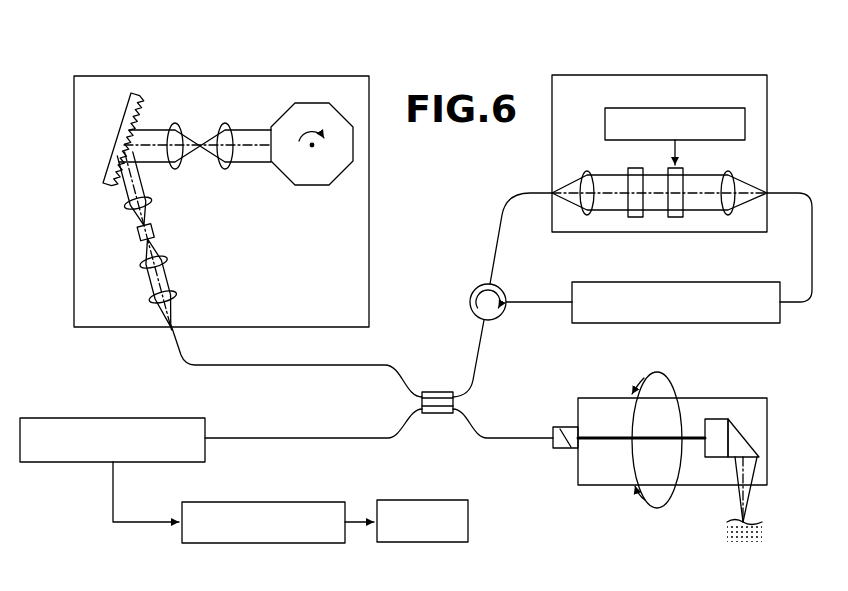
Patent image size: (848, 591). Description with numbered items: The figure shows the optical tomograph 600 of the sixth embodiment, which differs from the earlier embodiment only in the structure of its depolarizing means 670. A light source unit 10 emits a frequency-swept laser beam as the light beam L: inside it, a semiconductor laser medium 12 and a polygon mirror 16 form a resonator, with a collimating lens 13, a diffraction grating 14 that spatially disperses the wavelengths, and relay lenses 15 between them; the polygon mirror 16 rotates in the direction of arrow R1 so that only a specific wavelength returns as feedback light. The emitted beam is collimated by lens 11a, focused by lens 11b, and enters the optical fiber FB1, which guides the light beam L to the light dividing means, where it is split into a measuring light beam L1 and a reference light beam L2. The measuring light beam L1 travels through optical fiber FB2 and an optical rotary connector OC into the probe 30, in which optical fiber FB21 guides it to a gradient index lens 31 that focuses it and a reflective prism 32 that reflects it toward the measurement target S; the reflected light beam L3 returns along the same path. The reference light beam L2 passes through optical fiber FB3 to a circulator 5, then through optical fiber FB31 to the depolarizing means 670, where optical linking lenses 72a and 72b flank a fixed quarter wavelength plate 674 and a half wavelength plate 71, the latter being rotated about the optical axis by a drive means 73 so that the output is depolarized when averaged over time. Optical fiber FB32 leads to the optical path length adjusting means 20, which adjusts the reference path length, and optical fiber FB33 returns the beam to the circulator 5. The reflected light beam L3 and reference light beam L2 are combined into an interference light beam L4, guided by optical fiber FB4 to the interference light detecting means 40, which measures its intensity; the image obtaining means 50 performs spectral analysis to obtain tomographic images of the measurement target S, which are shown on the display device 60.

The optical tomograph 600 is at (760, 52).
The light source unit 10 is at (369, 274).
The diffracting optical element 14 is at (126, 110).
The relay lenses 15 is at (222, 169).
The polygon mirror 16 is at (334, 186).
The rotation direction arrow R1 is at (306, 153).
The collimating lens 13 is at (151, 201).
The semiconductor laser medium 12 is at (154, 231).
The optical linking lens 11a is at (167, 260).
The optical linking lens 11b is at (176, 295).
The light beam L is at (205, 360).
The optical fiber FB1 is at (364, 365).
The optical fiber FB4 is at (271, 438).
The interference light beam L4 is at (365, 430).
The interference light detecting means 40 is at (40, 464).
The image obtaining means 50 is at (195, 502).
The display device 60 is at (390, 500).
The optical fiber FB2 is at (520, 432).
The measuring light beam L1 is at (513, 428).
The reflected light beam L3 is at (497, 446).
The optical rotary connector OC is at (560, 425).
The probe 30 is at (767, 418).
The optical fiber FB21 is at (641, 429).
The gradient index lens 31 is at (712, 419).
The reflective prism 32 is at (760, 445).
The measurement target S is at (765, 520).
The circulator 5 is at (470, 302).
The optical fiber FB3 is at (483, 350).
The reference light beam L2 is at (473, 333).
The optical fiber FB33 is at (550, 298).
The optical path length adjusting means 20 is at (645, 323).
The optical fiber FB32 is at (812, 252).
The optical fiber FB31 is at (537, 191).
The depolarizing means 670 is at (768, 170).
The drive means 73 is at (732, 108).
The optical linking lens 72a is at (588, 217).
The 1/4 wavelength plate 674 is at (636, 217).
The 1/2 wavelength plate 71 is at (676, 217).
The optical linking lens 72b is at (730, 215).